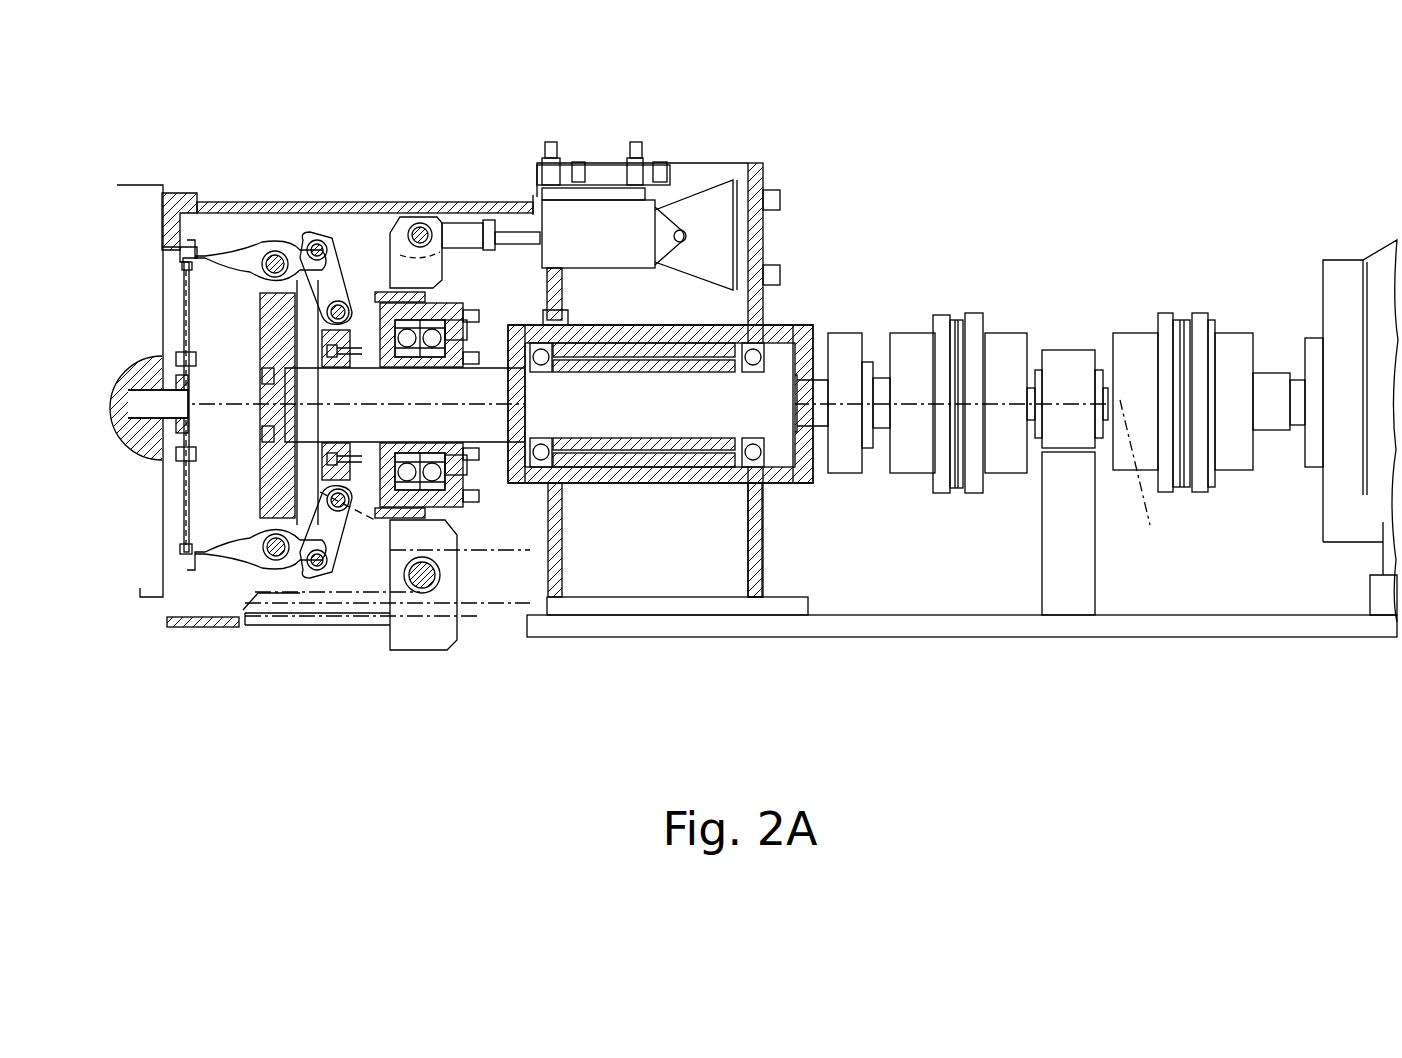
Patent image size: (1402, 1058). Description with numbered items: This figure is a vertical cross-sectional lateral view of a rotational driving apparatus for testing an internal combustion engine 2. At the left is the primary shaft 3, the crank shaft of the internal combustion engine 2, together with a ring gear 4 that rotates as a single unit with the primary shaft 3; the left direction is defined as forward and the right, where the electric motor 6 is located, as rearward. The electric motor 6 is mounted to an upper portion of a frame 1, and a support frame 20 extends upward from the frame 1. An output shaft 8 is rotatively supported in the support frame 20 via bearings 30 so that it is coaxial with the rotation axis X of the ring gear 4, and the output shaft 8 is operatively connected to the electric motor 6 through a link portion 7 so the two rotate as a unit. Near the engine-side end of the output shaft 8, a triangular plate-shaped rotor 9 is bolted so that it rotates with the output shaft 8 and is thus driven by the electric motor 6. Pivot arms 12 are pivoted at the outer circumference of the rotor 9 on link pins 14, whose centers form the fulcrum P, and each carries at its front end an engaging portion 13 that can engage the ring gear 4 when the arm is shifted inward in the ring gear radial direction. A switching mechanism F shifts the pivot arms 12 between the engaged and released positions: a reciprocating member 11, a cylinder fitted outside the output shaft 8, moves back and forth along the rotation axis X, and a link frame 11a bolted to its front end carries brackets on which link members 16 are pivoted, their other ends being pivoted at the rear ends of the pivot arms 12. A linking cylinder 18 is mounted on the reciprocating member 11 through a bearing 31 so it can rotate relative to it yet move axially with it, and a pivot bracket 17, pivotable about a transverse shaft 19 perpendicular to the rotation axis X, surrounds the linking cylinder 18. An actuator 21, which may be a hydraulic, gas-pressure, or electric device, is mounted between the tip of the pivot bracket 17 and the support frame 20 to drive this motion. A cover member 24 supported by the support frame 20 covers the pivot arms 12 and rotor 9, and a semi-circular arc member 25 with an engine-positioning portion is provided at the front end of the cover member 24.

The frame 1 is at (775, 662).
The internal combustion engine 2 is at (120, 545).
The primary shaft 3 is at (165, 405).
The ring gear 4 is at (183, 332).
The electric motor 6 is at (1352, 275).
The link portion 7 is at (1040, 290).
The output shaft 8 is at (776, 425).
The rotor 9 is at (272, 363).
The reciprocating member 11 is at (380, 522).
The link frame 11a is at (352, 340).
The pivot arm 12 is at (232, 240).
The engaging portion 13 is at (175, 258).
The link pin 14 is at (255, 678).
The link member 16 is at (360, 582).
The pivot bracket 17 is at (440, 270).
The linking cylinder 18 is at (455, 478).
The transverse shaft 19 is at (420, 595).
The support frame 20 is at (705, 165).
The actuator 21 is at (600, 262).
The cover member 24 is at (328, 202).
The semi-circular arc member 25 is at (190, 196).
The bearing 30 is at (555, 490).
The bearing 31 is at (470, 470).
The rotation axis X is at (1139, 478).
The switching mechanism F is at (430, 165).